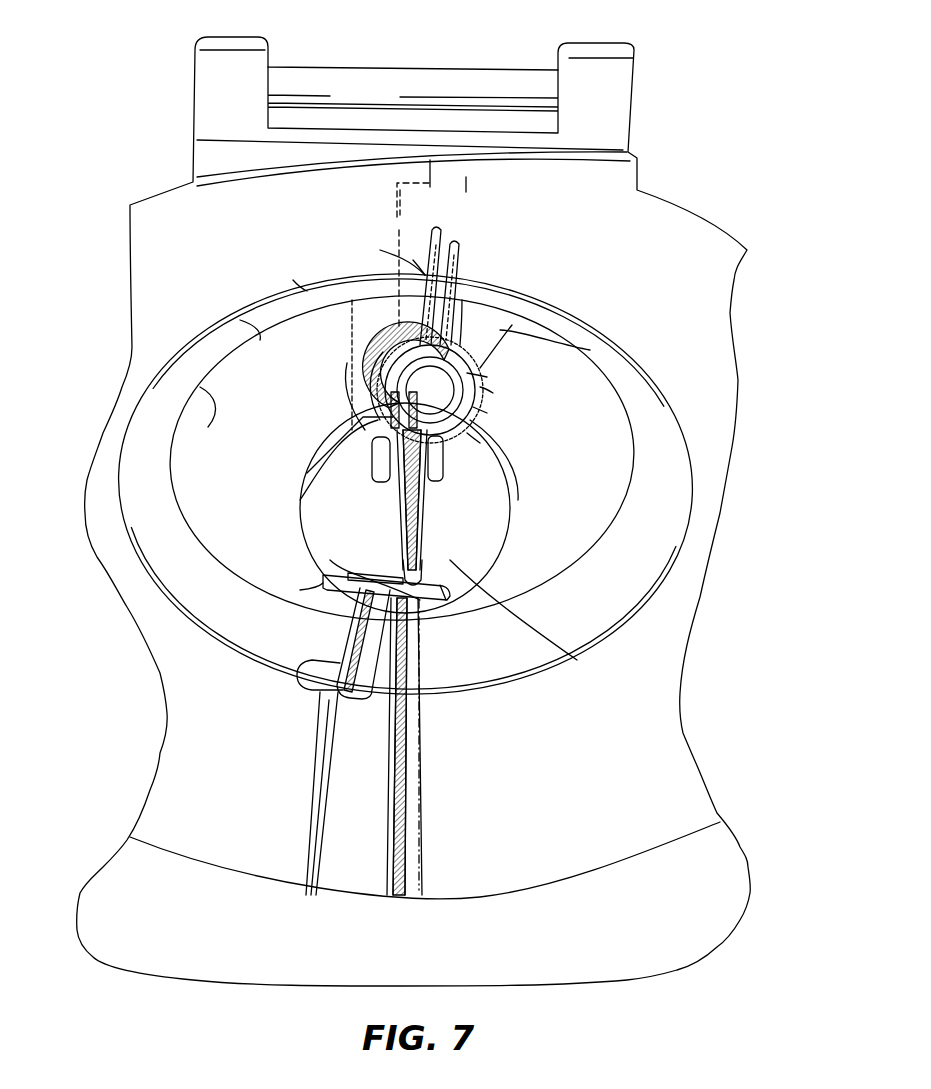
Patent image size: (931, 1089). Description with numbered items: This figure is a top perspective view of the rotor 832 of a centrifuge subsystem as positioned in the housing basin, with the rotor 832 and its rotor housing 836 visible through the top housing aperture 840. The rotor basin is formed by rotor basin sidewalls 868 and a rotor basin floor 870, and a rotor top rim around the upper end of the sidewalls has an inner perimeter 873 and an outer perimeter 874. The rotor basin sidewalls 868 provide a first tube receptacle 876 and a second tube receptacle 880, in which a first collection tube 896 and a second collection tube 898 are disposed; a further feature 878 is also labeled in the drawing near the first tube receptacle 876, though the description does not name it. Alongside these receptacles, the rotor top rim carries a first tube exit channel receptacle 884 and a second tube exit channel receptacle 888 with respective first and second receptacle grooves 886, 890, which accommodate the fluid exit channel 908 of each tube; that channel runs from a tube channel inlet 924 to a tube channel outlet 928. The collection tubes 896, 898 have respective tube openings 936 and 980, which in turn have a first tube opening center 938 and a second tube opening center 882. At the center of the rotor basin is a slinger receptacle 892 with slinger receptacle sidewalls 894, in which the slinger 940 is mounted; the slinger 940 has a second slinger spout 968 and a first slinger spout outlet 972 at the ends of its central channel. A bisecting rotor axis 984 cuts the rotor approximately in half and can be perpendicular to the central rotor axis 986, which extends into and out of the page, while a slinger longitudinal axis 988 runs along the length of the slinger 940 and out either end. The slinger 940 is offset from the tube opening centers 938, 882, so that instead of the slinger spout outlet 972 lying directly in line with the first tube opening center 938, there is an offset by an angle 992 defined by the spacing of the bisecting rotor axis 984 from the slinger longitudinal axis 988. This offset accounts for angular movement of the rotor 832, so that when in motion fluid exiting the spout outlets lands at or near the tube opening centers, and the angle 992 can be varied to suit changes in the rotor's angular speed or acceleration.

The rotor 832 is at (632, 345).
The rotor housing 836 is at (660, 407).
The top housing aperture 840 is at (207, 507).
The rotor basin sidewalls 868 is at (200, 387).
The rotor basin floor 870 is at (665, 556).
The inner perimeter 873 is at (240, 320).
The outer perimeter 874 is at (293, 280).
The first tube receptacle 876 is at (487, 377).
The wire 878 is at (487, 413).
The second tube receptacle 880 is at (320, 590).
The tube opening center 882 is at (577, 660).
The first tube exit channel receptacle 884 is at (413, 260).
The first receptacle groove 886 is at (440, 232).
The second tube exit channel receptacle 888 is at (345, 640).
The second receptacle groove 890 is at (317, 673).
The slinger receptacle 892 is at (464, 598).
The slinger receptacle sidewalls 894 is at (310, 480).
The first collection tube 896 is at (493, 393).
The second collection tube 898 is at (410, 782).
The fluid exit channel 908 is at (440, 395).
The tube channel inlet 924 is at (383, 352).
The tube channel outlet 928 is at (462, 300).
The tube opening 936 is at (480, 443).
The first tube opening center 938 is at (512, 325).
The slinger 940 is at (470, 560).
The second slinger spout 968 is at (422, 608).
The first slinger spout outlet 972 is at (347, 363).
The tube opening 980 is at (355, 555).
The bisecting rotor axis 984 is at (466, 177).
The central rotor axis 986 is at (382, 448).
The slinger longitudinal axis 988 is at (395, 170).
The angle 992 is at (430, 187).